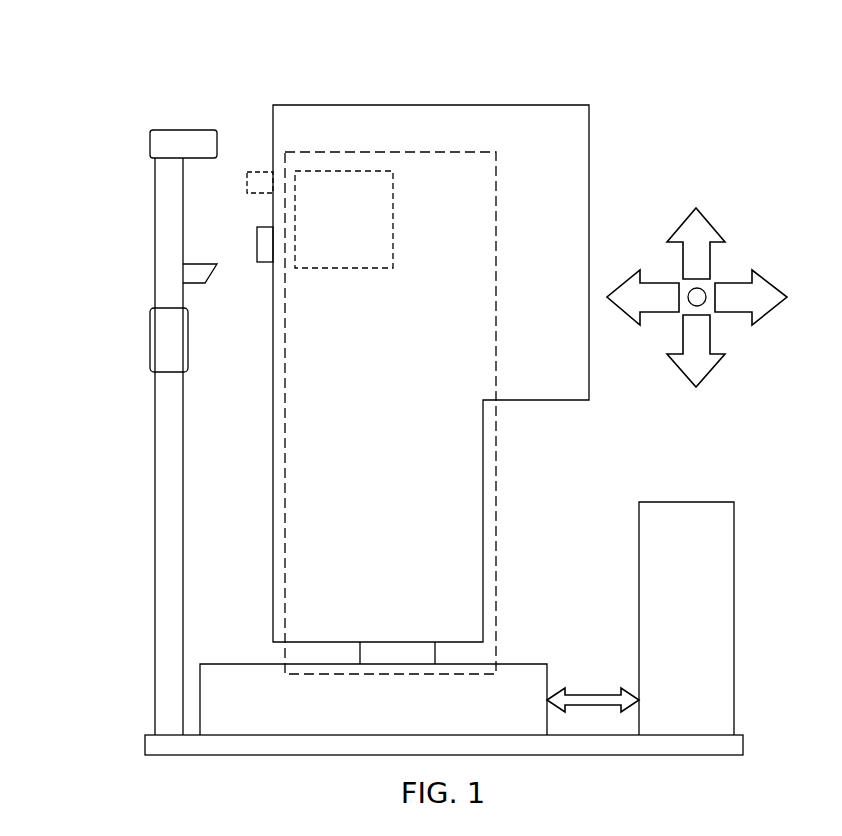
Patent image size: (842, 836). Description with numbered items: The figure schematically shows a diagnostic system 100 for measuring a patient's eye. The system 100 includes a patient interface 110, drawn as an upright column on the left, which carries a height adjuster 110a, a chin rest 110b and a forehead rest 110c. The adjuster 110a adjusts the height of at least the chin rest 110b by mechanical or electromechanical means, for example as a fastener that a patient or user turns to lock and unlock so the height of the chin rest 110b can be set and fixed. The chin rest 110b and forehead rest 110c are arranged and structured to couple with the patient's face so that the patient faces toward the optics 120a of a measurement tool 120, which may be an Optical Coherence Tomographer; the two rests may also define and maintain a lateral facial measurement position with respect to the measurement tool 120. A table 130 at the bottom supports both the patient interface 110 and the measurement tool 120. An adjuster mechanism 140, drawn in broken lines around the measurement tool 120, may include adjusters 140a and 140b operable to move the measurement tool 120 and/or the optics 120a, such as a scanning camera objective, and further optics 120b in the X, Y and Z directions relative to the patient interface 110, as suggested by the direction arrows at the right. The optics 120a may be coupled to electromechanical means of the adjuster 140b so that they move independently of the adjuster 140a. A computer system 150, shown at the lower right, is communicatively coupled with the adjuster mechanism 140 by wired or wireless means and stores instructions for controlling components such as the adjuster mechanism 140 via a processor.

The system 100 is at (308, 58).
The patient interface 110 is at (73, 127).
The height adjuster 110a is at (157, 340).
The chin rest 110b is at (200, 272).
The forehead rest 110c is at (182, 137).
The measurement tool 120 is at (465, 100).
The optics 120a is at (258, 263).
The optics 120b is at (260, 176).
The table 130 is at (146, 742).
The adjuster mechanism 140 is at (496, 425).
The adjuster 140a is at (398, 650).
The adjuster 140b is at (390, 216).
The computer system 150 is at (728, 618).